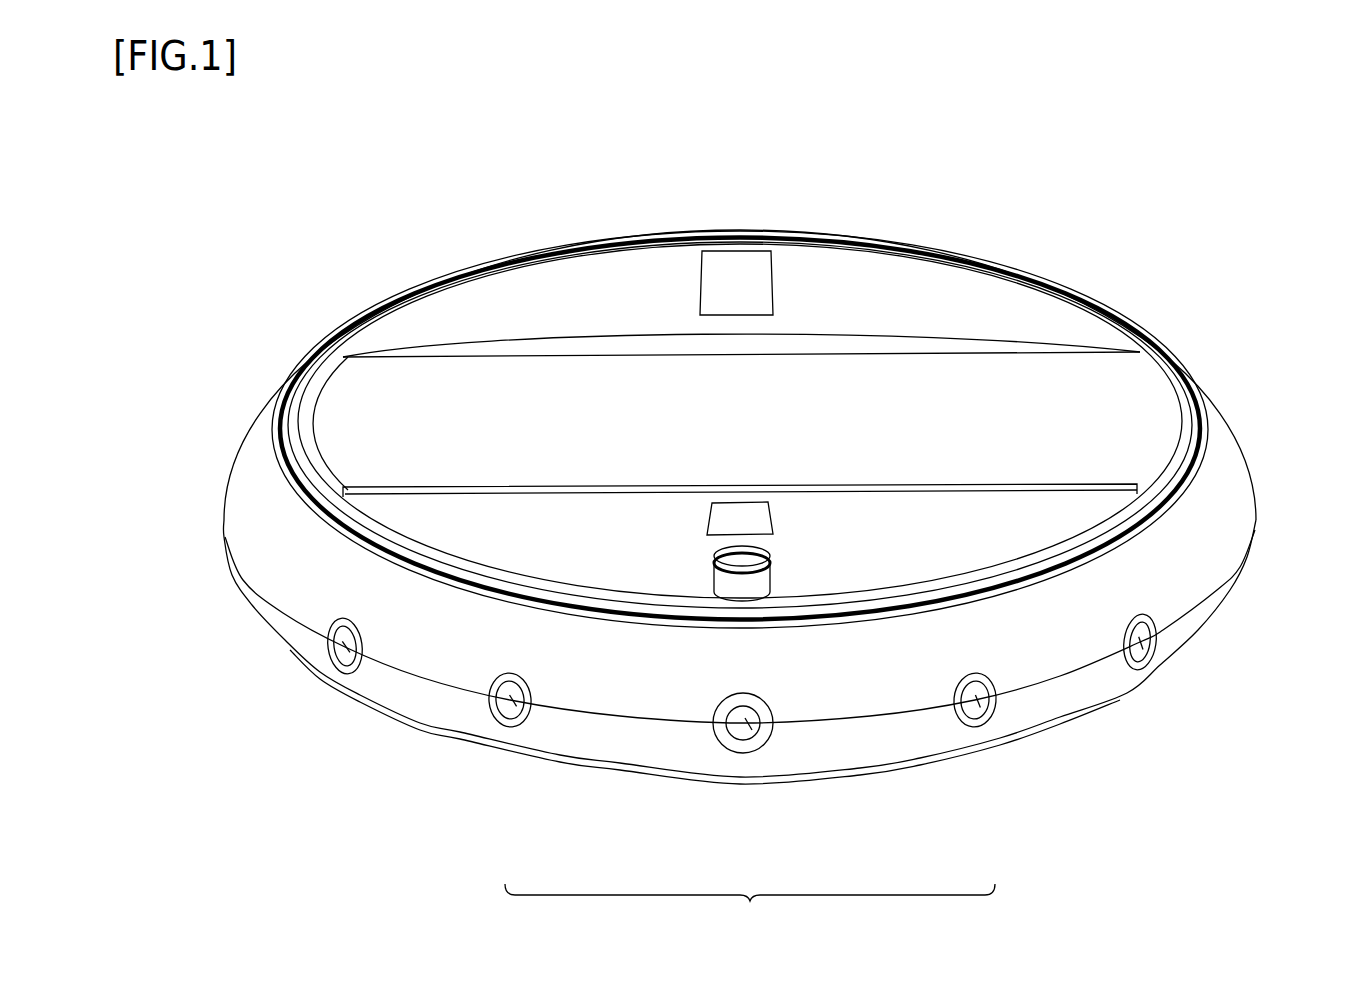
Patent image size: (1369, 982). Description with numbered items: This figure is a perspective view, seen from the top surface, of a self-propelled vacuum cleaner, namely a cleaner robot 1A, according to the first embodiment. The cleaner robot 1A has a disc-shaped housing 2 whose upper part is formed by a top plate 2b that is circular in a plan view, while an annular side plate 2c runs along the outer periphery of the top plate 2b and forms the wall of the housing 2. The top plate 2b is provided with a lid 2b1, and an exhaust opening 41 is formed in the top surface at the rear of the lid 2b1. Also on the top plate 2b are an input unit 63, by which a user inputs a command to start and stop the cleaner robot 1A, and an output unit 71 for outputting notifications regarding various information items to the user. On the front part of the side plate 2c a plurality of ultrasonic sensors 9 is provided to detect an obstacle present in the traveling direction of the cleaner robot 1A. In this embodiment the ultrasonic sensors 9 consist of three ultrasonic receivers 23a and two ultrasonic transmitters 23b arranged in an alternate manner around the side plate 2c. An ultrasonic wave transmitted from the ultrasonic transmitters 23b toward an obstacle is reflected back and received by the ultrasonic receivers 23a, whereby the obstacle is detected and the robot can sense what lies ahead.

The cleaner robot 1A is at (1093, 203).
The housing 2 is at (1229, 530).
The top plate 2b is at (842, 287).
The lid 2b1 is at (1127, 400).
The side plate 2c is at (1162, 595).
The ultrasonic sensors 9 is at (750, 915).
The ultrasonic receivers 23a is at (350, 677).
The ultrasonic transmitters 23b is at (516, 722).
The exhaust opening 41 is at (880, 350).
The input unit 63 is at (722, 518).
The output unit 71 is at (722, 273).